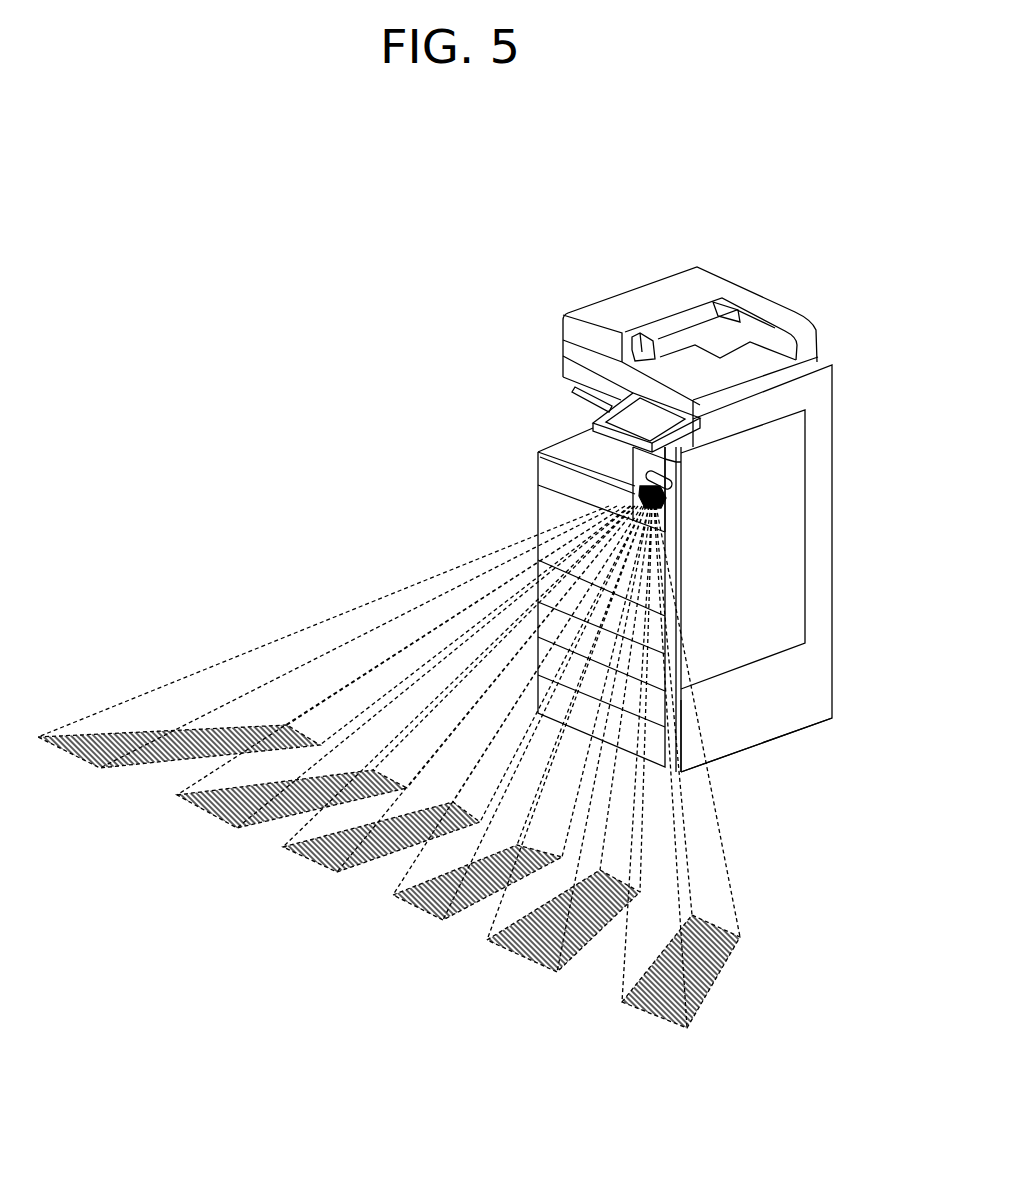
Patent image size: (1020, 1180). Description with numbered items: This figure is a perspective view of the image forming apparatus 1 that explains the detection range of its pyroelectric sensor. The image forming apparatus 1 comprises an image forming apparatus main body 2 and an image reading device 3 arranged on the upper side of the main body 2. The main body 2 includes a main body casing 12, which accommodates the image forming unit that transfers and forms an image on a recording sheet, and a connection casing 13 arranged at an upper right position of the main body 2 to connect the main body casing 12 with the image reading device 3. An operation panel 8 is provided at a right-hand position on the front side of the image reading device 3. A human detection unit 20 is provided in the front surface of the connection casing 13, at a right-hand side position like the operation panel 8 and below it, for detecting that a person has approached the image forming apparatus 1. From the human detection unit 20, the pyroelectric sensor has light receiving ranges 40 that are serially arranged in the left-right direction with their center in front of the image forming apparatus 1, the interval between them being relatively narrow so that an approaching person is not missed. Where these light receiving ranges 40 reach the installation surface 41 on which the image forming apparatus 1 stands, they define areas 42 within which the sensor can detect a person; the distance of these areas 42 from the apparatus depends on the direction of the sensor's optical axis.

The image forming apparatus 1 is at (581, 284).
The image forming apparatus main body 2 is at (814, 677).
The image reading device 3 is at (798, 312).
The operation panel 8 is at (593, 425).
The main body casing 12 is at (780, 727).
The connection casing 13 is at (678, 467).
The human detection unit 20 is at (673, 490).
The light receiving ranges 40 is at (347, 680).
The installation surface 41 is at (733, 753).
The areas 42 is at (392, 897).